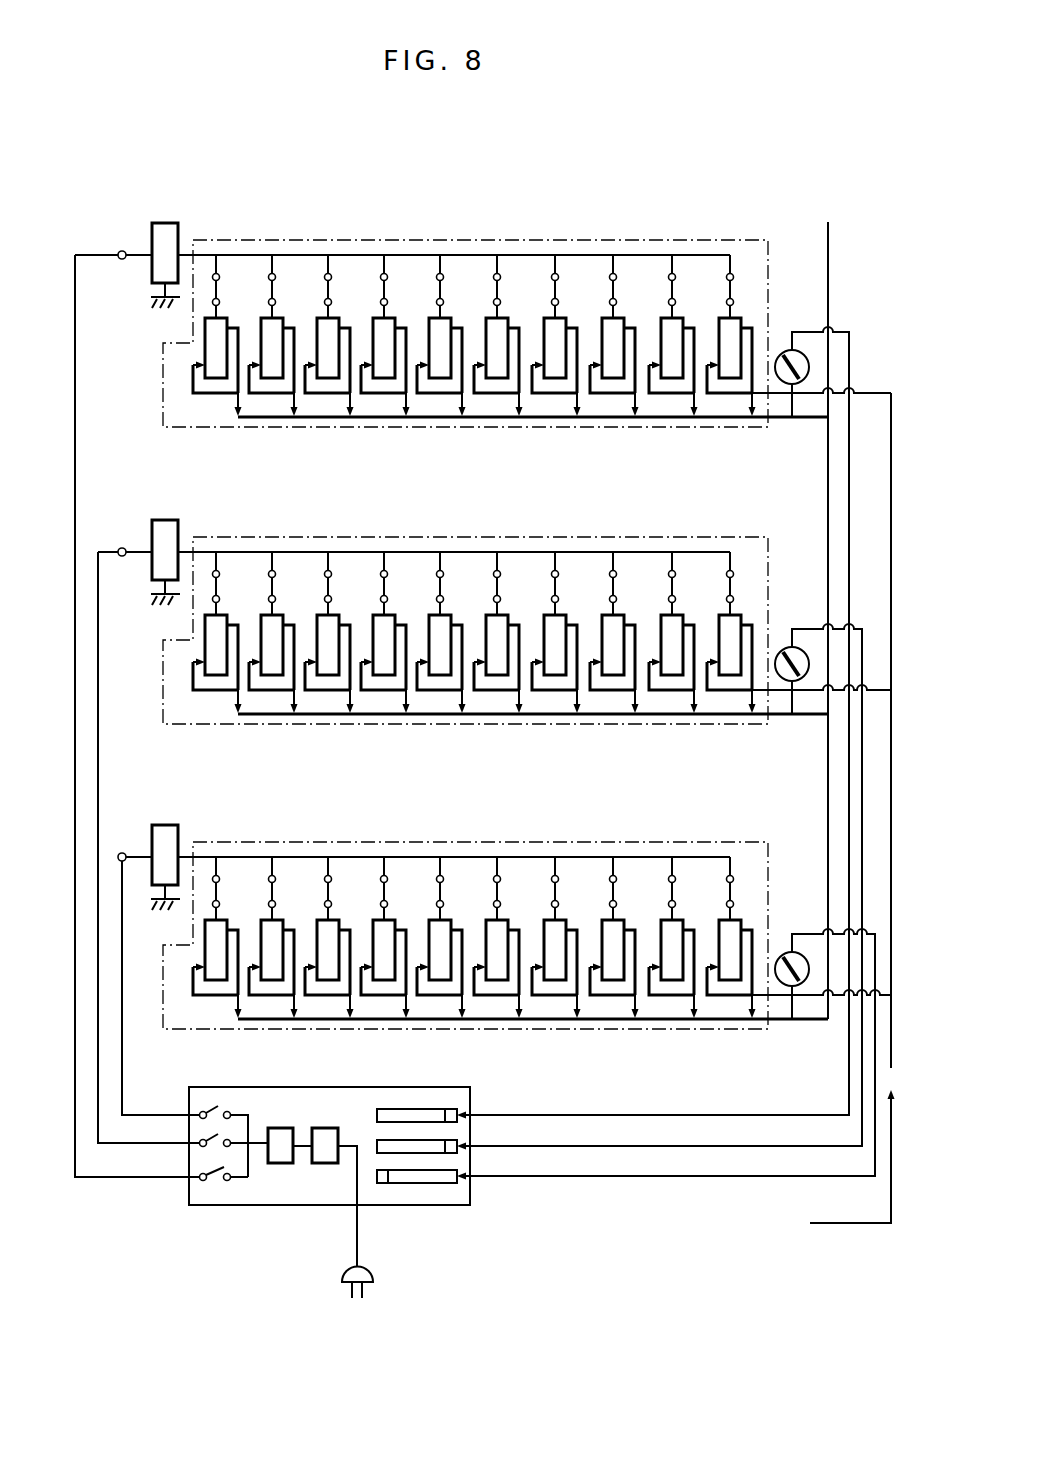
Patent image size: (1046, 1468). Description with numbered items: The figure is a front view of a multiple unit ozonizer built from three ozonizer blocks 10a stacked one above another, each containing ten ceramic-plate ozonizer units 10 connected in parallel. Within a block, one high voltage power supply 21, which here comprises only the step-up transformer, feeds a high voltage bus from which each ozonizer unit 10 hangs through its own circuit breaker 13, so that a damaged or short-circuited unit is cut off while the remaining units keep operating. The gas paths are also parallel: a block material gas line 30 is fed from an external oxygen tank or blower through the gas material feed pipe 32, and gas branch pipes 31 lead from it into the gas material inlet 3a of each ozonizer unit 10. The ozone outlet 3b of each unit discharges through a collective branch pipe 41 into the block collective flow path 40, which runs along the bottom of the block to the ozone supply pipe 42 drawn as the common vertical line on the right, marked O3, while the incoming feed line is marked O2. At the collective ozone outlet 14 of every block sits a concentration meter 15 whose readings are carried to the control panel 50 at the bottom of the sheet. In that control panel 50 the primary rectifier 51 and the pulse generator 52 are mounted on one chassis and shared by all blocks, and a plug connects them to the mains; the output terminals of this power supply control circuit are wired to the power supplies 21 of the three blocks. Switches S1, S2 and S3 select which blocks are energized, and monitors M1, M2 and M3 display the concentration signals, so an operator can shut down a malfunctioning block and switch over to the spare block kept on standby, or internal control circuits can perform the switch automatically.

The ozonizer unit 10 is at (221, 323).
The ozonizer block 10a is at (522, 236).
The circuit breaker 13 is at (274, 290).
The collective ozone outlet 14 is at (792, 410).
The concentration meter 15 is at (788, 350).
The high voltage power supply 21 is at (168, 228).
The gas material inlet 3a is at (196, 367).
The ozone outlet 3b is at (236, 332).
The block material gas line 30 is at (200, 395).
The gas branch pipe 31 is at (240, 396).
The gas material feed pipe 32 is at (891, 485).
The block collective flow path 40 is at (505, 418).
The collective branch pipe 41 is at (294, 412).
The ozone supply pipe 42 is at (826, 800).
The control panel 50 is at (427, 1210).
The primary rectifier 51 is at (323, 1162).
The pulse generator 52 is at (280, 1162).
The switch S1 is at (215, 1111).
The switch S2 is at (215, 1146).
The switch S3 is at (215, 1182).
The monitor M1 is at (430, 1108).
The monitor M2 is at (432, 1139).
The monitor M3 is at (433, 1184).
The output terminal O2 is at (852, 1174).
The output terminal O3 is at (835, 240).